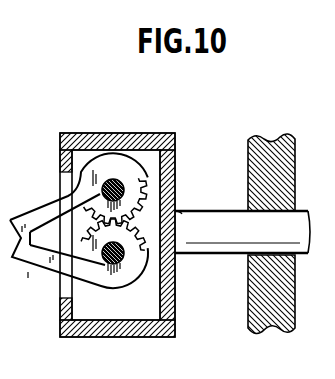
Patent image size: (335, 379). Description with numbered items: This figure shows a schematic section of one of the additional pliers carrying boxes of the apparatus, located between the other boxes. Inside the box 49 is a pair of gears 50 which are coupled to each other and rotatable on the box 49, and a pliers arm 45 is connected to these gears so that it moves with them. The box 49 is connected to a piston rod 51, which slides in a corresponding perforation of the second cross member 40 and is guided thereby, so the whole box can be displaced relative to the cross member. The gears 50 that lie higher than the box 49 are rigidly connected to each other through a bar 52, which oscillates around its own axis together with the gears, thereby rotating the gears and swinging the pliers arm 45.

The second cross member 40 is at (260, 166).
The pliers arm 45 is at (43, 211).
The pliers carrying box 49 is at (114, 141).
The pair of gears 50 is at (120, 183).
The piston rod 51 is at (197, 230).
The bar 52 is at (149, 134).